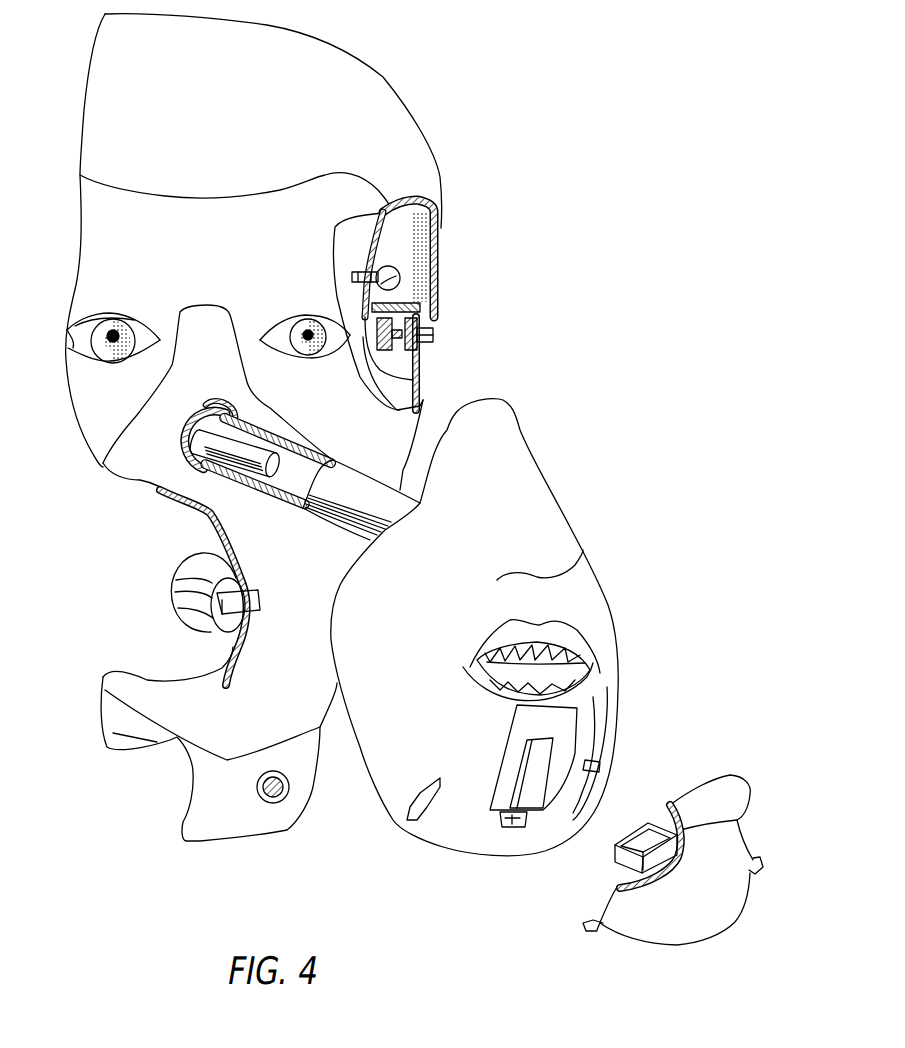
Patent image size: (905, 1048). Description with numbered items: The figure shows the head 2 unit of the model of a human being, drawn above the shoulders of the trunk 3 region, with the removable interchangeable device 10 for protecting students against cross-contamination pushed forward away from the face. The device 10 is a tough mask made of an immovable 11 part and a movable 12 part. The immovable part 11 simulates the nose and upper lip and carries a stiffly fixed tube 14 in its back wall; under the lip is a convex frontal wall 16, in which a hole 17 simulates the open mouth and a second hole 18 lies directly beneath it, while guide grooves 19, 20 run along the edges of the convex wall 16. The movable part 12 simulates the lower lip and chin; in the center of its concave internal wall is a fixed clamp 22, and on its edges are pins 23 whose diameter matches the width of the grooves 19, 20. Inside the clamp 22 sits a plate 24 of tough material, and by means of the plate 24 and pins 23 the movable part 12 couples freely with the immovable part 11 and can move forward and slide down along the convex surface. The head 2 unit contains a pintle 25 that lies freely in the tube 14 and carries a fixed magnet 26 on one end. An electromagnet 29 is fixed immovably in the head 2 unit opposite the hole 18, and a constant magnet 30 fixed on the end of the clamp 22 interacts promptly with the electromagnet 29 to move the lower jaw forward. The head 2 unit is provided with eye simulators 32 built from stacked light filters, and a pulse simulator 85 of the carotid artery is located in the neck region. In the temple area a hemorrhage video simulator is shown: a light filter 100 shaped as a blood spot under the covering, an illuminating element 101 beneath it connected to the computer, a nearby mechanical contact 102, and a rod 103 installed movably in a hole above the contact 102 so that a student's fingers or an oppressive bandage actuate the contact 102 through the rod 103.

The head unit 2 is at (108, 88).
The shoulders / torso 3 is at (197, 817).
The removable interchangeable device 10 is at (618, 518).
The immovable part 11 is at (595, 590).
The movable part 12 is at (705, 917).
The tube 14 is at (337, 502).
The convex frontal wall 16 is at (588, 703).
The hole 17 is at (573, 673).
The hole 18 is at (533, 722).
The guide groove 19 is at (415, 793).
The guide groove 20 is at (585, 787).
The clamp 22 is at (633, 870).
The pins 23 is at (758, 858).
The plate 24 is at (543, 763).
The pintle 25 is at (222, 447).
The magnet 26 is at (196, 427).
The electromagnet 29 is at (190, 575).
The constant magnet 30 is at (615, 852).
The eye simulators 32 is at (80, 342).
The pulse simulator of the carotid artery 85 is at (273, 805).
The light filter 100 is at (437, 227).
The illuminating element 101 is at (365, 270).
The mechanical contact 102 is at (367, 310).
The rod 103 is at (433, 330).